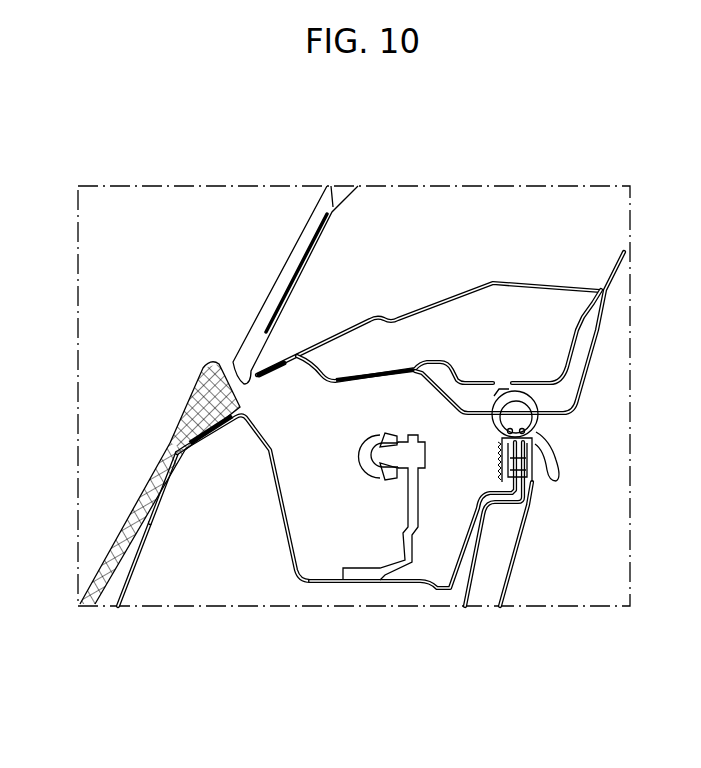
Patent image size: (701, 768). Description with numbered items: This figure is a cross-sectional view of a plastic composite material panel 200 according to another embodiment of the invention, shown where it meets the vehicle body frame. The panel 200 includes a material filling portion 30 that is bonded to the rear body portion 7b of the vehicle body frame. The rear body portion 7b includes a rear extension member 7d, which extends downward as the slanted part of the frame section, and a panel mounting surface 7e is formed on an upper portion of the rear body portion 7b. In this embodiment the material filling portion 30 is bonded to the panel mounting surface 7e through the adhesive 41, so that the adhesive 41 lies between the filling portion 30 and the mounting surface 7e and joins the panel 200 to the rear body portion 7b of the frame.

The plastic composite material panel 200 is at (127, 455).
The material filling portion 30 is at (187, 376).
The adhesive 41 is at (180, 433).
The rear body portion 7b is at (155, 578).
The rear extension member 7d is at (167, 493).
The panel mounting surface 7e is at (244, 428).